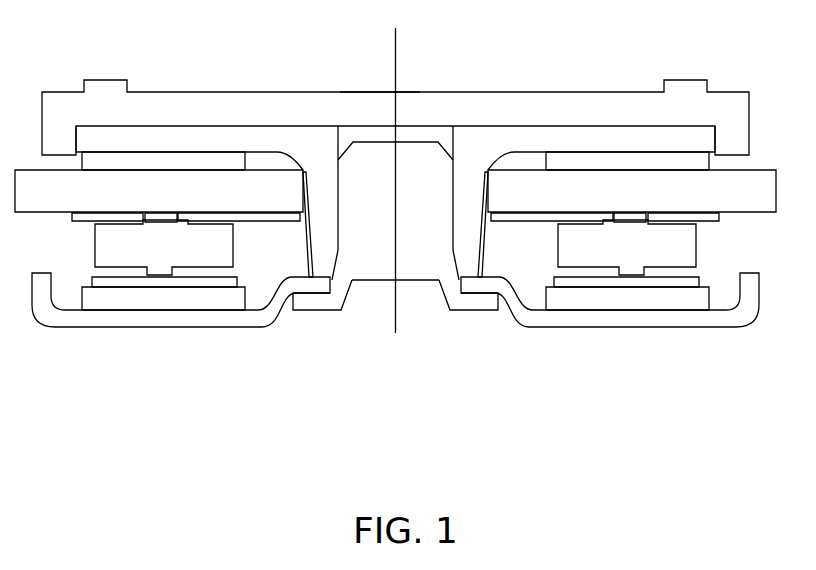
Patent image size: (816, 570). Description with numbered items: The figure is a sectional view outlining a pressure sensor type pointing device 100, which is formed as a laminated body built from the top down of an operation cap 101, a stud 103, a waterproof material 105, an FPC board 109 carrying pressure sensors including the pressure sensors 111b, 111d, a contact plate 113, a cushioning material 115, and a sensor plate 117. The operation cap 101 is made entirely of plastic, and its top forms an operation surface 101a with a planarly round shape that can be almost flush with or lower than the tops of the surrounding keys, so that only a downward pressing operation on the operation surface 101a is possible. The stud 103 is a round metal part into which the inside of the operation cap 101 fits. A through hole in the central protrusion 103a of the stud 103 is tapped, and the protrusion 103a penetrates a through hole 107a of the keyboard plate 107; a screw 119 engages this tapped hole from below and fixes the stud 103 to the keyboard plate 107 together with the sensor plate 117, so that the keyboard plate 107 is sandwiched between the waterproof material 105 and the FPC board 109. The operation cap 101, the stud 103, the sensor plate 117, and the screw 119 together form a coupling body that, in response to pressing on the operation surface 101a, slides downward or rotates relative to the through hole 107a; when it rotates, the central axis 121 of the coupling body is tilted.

The pointing device 100 is at (146, 52).
The operation cap 101 is at (245, 102).
The operation surface 101a is at (368, 90).
The stud 103 is at (162, 135).
The central protrusion 103a is at (457, 189).
The waterproof material 105 is at (201, 165).
The keyboard plate 107 is at (280, 180).
The through hole 107a is at (299, 231).
The FPC board 109 is at (113, 216).
The pressure sensor 111b is at (150, 228).
The pressure sensor 111d is at (617, 228).
The contact plate 113 is at (230, 272).
The cushioning material 115 is at (263, 287).
The sensor plate 117 is at (43, 273).
The screw 119 is at (413, 156).
The central axis 121 is at (402, 179).